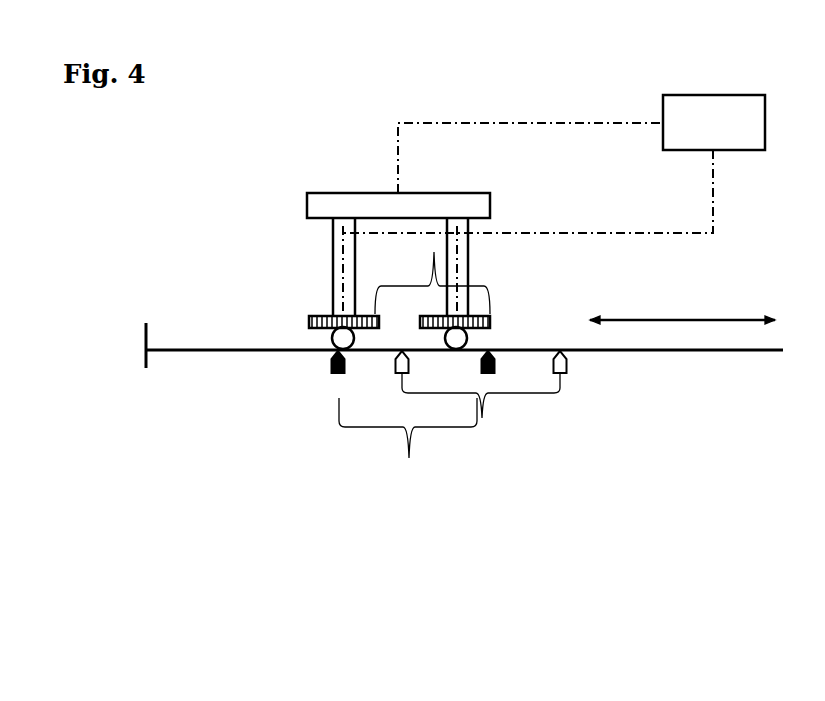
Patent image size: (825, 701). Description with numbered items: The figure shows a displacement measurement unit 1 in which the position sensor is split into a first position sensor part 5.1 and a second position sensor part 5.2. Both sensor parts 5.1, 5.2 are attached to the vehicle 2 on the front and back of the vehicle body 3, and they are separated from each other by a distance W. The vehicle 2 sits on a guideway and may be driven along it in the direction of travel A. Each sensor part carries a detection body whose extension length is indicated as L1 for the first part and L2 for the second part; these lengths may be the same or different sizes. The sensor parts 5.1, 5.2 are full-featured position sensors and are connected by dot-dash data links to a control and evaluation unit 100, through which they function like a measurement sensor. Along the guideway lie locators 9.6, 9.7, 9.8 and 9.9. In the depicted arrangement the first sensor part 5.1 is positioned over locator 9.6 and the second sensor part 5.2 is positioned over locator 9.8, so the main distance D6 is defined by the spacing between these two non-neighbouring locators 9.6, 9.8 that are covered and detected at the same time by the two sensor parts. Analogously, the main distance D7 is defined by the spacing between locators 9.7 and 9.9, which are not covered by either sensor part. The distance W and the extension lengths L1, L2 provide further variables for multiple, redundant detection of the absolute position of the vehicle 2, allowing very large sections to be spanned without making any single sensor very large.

The displacement measurement unit 1 is at (562, 313).
The vehicle 2 is at (485, 138).
The vehicle body 3 is at (463, 245).
The control and evaluation unit 100 is at (733, 135).
The distance W is at (430, 252).
The extension length L1 is at (340, 288).
The extension length L2 is at (476, 303).
The first position sensor part 5.1 is at (312, 316).
The second position sensor part 5.2 is at (488, 317).
The locator 9.6 is at (338, 374).
The locator 9.7 is at (402, 374).
The locator 9.8 is at (488, 374).
The locator 9.9 is at (560, 374).
The main distance D6 is at (402, 457).
The main distance D7 is at (482, 418).
The direction of travel A is at (682, 309).